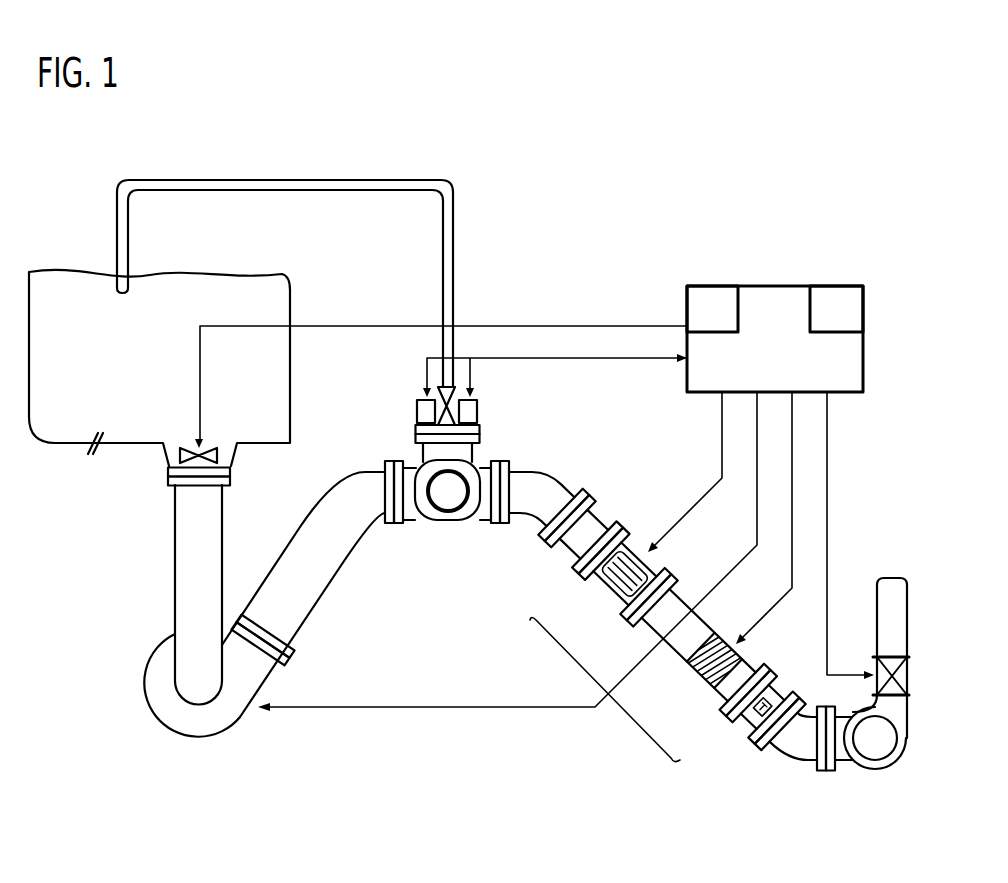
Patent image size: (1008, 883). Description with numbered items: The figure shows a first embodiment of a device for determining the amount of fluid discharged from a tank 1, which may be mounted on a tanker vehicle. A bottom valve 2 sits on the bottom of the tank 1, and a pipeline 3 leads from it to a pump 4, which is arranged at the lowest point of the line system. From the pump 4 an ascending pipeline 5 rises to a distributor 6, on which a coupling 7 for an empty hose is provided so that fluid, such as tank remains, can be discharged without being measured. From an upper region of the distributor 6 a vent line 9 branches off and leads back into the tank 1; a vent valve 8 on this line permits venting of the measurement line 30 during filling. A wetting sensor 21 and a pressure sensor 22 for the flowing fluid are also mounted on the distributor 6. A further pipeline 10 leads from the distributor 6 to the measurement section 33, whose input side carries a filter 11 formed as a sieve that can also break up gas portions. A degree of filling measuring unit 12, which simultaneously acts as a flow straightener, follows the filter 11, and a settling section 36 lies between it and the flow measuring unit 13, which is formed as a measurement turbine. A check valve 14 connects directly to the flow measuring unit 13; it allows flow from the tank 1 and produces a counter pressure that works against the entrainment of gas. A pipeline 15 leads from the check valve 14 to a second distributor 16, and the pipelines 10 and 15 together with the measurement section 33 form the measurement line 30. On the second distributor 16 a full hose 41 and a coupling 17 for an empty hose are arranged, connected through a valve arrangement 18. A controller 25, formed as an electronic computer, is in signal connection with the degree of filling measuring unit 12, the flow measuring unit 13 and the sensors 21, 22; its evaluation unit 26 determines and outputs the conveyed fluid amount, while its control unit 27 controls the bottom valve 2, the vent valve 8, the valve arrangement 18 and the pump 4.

The tank 1 is at (110, 378).
The bottom valve 2 is at (170, 478).
The pipeline 3 is at (185, 598).
The pump 4 is at (197, 737).
The ascending pipeline 5 is at (325, 559).
The distributor 6 is at (413, 506).
The coupling 7 is at (448, 521).
The vent valve 8 is at (428, 392).
The vent line 9 is at (455, 236).
The pipeline 10 is at (538, 487).
The filter 11 is at (601, 512).
The degree of filling measuring unit 12 is at (655, 549).
The flow measuring unit 13 is at (703, 674).
The check valve 14 is at (680, 762).
The pipeline 15 is at (793, 753).
The second distributor 16 is at (878, 753).
The coupling 17 is at (857, 766).
The valve arrangement 18 is at (878, 670).
The wetting sensor 21 is at (480, 412).
The pressure sensor 22 is at (416, 410).
The controller 25 is at (760, 375).
The evaluation unit 26 is at (727, 323).
The control unit 27 is at (823, 323).
The measurement line 30 is at (568, 751).
The measurement section 33 is at (594, 705).
The settling section 36 is at (700, 628).
The full hose 41 is at (893, 585).